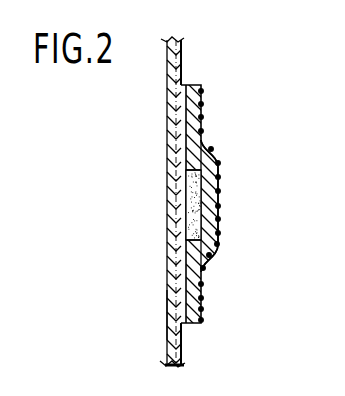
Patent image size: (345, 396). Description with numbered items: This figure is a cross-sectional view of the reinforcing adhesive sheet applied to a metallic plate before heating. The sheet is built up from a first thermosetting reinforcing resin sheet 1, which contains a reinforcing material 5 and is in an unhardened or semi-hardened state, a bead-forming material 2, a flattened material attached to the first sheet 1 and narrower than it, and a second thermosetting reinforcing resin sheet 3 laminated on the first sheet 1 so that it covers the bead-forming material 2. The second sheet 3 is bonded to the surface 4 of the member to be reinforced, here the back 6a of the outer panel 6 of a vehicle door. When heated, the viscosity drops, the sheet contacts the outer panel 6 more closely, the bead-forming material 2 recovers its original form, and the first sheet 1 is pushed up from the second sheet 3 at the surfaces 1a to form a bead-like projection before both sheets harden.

The first thermosetting reinforcing resin sheet 1 is at (220, 187).
The surfaces 1a is at (190, 164).
The bead-forming material 2 is at (196, 209).
The second thermosetting reinforcing resin sheet 3 is at (184, 107).
The surface of member to be reinforced 4 is at (178, 298).
The reinforcing material 5 is at (219, 237).
The outer panel 6 is at (180, 57).
The back of outer panel 6a is at (181, 72).